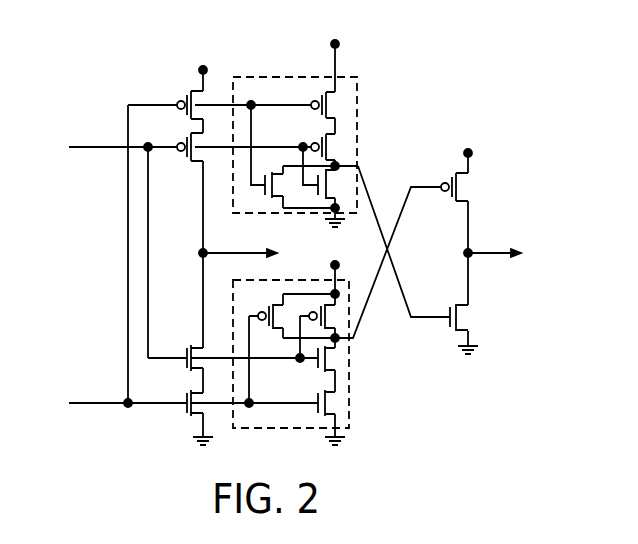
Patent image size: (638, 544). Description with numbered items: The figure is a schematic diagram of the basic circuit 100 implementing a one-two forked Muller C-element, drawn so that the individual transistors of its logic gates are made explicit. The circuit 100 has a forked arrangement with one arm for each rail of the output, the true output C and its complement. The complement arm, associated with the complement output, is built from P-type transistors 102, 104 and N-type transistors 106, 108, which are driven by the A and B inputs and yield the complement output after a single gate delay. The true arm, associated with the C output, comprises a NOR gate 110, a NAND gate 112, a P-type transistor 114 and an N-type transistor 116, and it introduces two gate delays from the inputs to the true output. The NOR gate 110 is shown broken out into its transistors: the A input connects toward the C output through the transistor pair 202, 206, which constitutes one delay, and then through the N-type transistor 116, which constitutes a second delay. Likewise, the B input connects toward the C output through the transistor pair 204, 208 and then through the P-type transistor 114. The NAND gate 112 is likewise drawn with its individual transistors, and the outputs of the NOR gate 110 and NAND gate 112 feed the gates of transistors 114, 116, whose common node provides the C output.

The circuit 100 is at (397, 57).
The P-type transistor 102 is at (179, 100).
The P-type transistor 104 is at (180, 153).
The N-type transistor 106 is at (184, 355).
The N-type transistor 108 is at (185, 405).
The NOR gate 110 is at (268, 77).
The NAND gate 112 is at (350, 377).
The P-type transistor 114 is at (444, 182).
The N-type transistor 116 is at (449, 305).
The transistor 202 is at (319, 112).
The transistor 204 is at (323, 133).
The transistor 206 is at (263, 191).
The transistor 208 is at (332, 182).